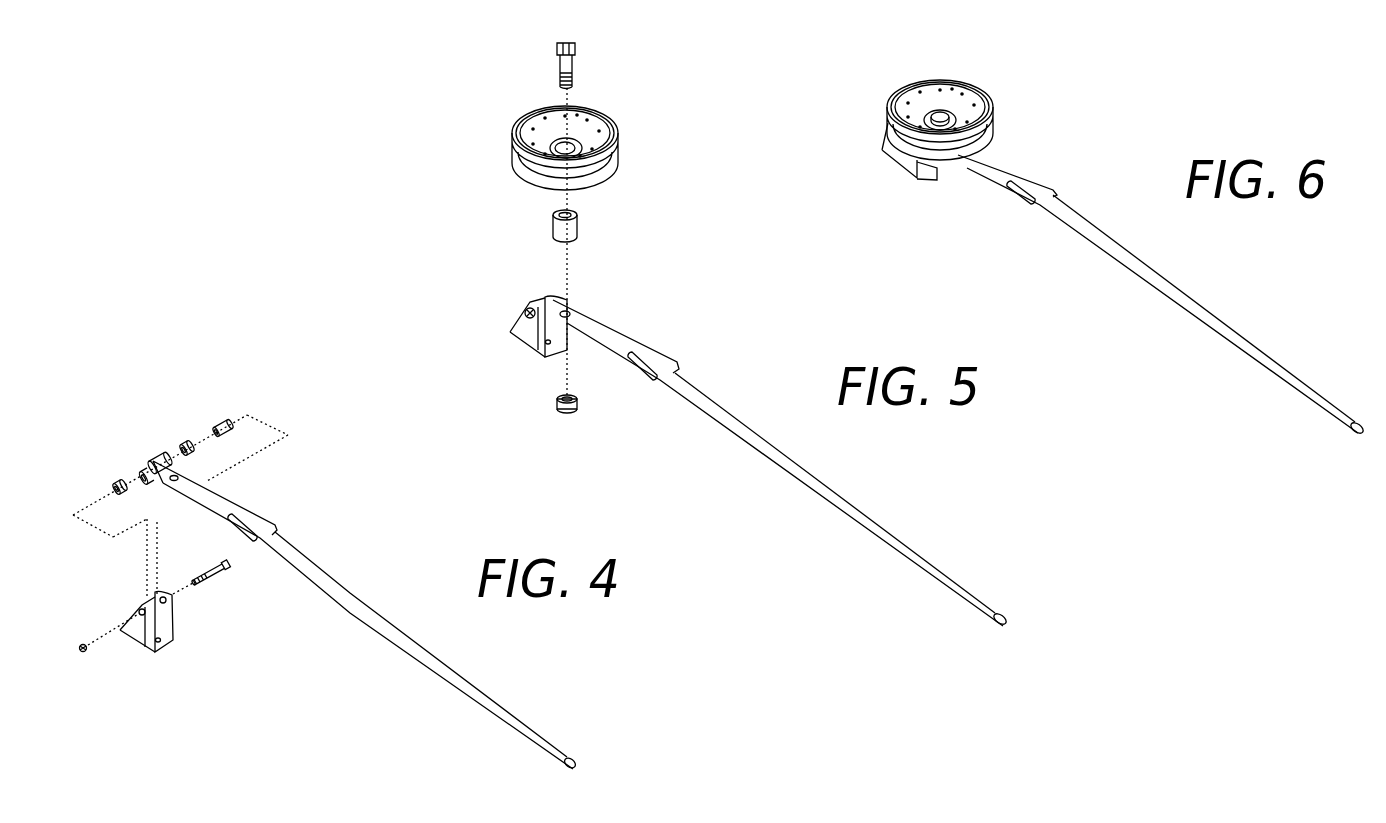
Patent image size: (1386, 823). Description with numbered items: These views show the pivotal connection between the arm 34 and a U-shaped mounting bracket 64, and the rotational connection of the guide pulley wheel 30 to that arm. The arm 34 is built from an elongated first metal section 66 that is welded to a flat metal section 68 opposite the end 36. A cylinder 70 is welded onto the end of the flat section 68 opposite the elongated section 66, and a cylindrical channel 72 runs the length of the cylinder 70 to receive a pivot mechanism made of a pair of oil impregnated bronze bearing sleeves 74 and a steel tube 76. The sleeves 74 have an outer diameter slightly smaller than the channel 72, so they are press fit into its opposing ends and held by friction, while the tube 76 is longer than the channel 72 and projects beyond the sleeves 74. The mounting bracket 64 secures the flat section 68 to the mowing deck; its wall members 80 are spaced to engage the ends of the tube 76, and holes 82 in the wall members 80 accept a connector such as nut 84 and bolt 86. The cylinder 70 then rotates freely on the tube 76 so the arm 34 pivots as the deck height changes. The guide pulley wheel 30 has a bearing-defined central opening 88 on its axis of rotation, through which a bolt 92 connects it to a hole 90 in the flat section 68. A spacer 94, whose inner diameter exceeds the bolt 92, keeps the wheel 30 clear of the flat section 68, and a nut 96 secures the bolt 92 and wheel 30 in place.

In FIG. 5, the guide pulley wheel 30 is at (543, 136).
In FIG. 6, the guide pulley wheel 30 is at (960, 112).
In FIG. 4, the arm 34 is at (399, 626).
In FIG. 5, the arm 34 is at (707, 420).
In FIG. 6, the arm 34 is at (1123, 258).
In FIG. 4, the end 36 is at (575, 765).
In FIG. 4, the U-shaped mounting bracket 64 is at (163, 644).
In FIG. 5, the U-shaped mounting bracket 64 is at (508, 326).
In FIG. 6, the U-shaped mounting bracket 64 is at (900, 185).
In FIG. 4, the elongated first metal section 66 is at (388, 628).
In FIG. 4, the flat metal section 68 is at (217, 500).
In FIG. 5, the flat metal section 68 is at (624, 328).
In FIG. 6, the flat metal section 68 is at (1007, 179).
In FIG. 4, the cylinder 70 is at (157, 458).
In FIG. 4, the cylindrical channel 72 is at (143, 472).
In FIG. 4, the bearing sleeves 74 is at (113, 484).
In FIG. 4, the steel tube 76 is at (225, 423).
In FIG. 4, the wall members 80 is at (175, 612).
In FIG. 4, the holes 82 is at (160, 598).
In FIG. 5, the holes 82 is at (528, 332).
In FIG. 6, the holes 82 is at (943, 164).
In FIG. 4, the nut 84 is at (80, 645).
In FIG. 4, the bolt 86 is at (219, 577).
In FIG. 5, the central opening 88 is at (548, 144).
In FIG. 5, the hole 90 is at (573, 314).
In FIG. 5, the bolt 92 is at (558, 72).
In FIG. 5, the spacer 94 is at (578, 228).
In FIG. 5, the nut 96 is at (556, 406).